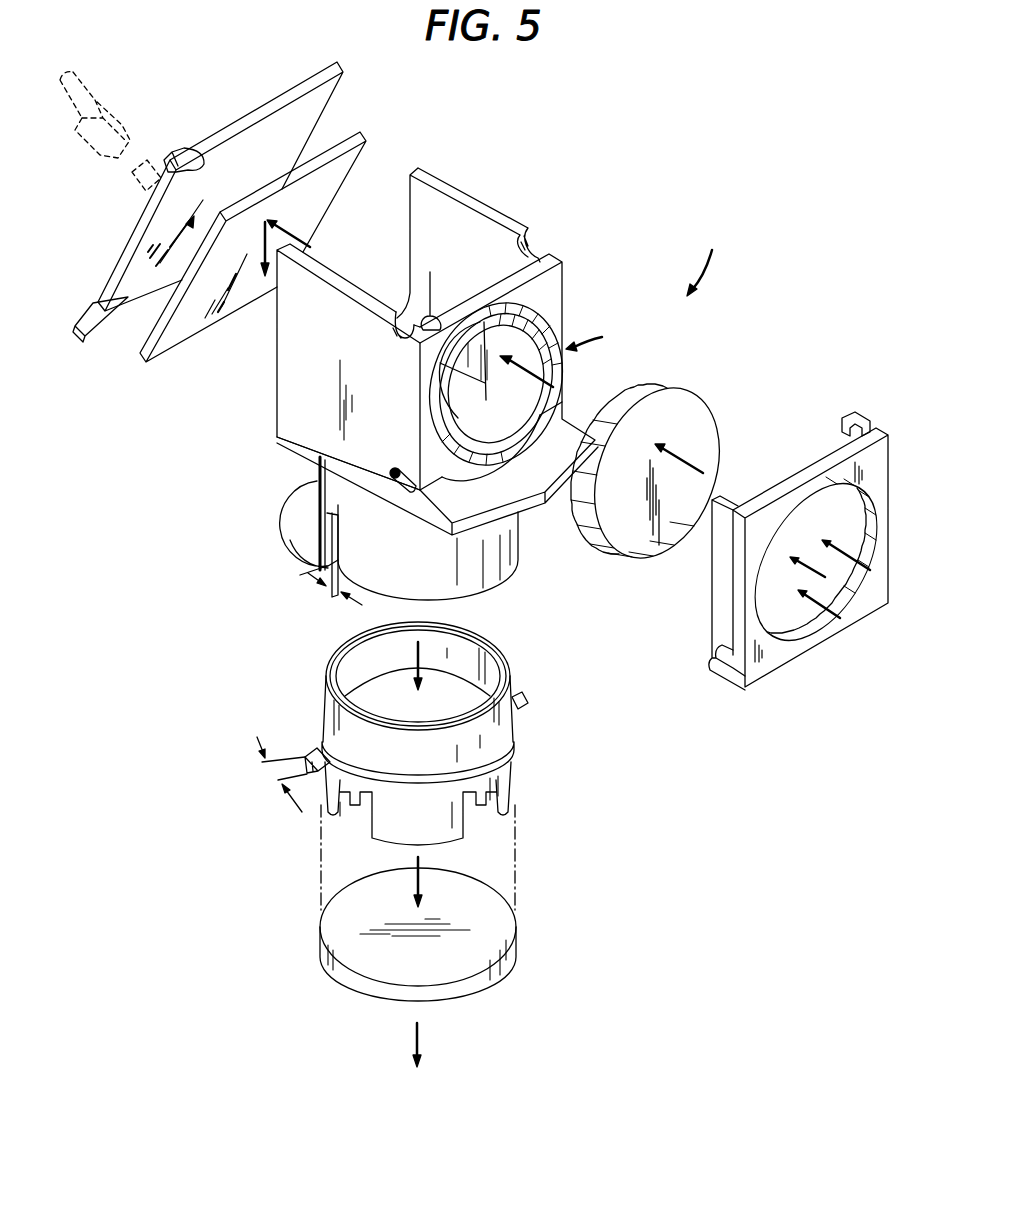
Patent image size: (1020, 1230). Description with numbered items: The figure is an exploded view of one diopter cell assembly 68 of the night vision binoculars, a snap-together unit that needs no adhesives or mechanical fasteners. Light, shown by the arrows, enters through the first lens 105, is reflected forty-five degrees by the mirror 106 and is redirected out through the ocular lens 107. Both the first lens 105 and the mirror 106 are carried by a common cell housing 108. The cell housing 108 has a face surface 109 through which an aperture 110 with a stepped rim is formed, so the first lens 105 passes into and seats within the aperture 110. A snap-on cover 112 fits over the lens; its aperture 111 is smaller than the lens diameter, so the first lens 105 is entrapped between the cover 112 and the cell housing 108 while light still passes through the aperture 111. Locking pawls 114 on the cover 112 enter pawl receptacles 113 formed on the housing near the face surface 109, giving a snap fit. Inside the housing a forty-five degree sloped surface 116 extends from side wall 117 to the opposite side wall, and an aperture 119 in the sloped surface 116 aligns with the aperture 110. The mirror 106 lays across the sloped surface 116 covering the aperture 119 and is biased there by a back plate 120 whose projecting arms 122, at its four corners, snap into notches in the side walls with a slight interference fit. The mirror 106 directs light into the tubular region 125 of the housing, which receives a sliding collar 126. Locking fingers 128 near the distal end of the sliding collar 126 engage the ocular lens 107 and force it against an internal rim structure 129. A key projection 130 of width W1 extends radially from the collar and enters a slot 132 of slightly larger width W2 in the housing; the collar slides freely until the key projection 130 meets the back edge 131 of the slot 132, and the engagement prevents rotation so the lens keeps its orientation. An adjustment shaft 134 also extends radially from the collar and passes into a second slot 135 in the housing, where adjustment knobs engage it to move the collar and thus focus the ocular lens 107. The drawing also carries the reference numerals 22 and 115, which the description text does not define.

The mounting tab 22 is at (90, 313).
The diopter cell assembly 68 is at (708, 260).
The first lens 105 is at (707, 438).
The mirror 106 is at (350, 163).
The ocular lens 107 is at (493, 918).
The cell housing 108 is at (603, 333).
The face surface 109 is at (547, 285).
The aperture 110 is at (510, 393).
The aperture 111 is at (793, 627).
The snap-on cover 112 is at (790, 507).
The pawl receptacles 113 is at (433, 317).
The locking pawls 114 is at (716, 647).
The mirror plate 115 is at (483, 233).
The sloped surface 116 is at (398, 307).
The side wall 117 is at (325, 322).
The aperture 119 is at (472, 404).
The back plate 120 is at (203, 157).
The projecting arms 122 is at (184, 160).
The tubular region 125 is at (310, 482).
The sliding collar 126 is at (487, 740).
The locking fingers 128 is at (357, 822).
The internal rim structure 129 is at (367, 657).
The key projection 130 is at (310, 752).
The back edge 131 is at (303, 537).
The slot 132 is at (300, 575).
The adjustment shaft 134 is at (524, 712).
The second slot 135 is at (503, 543).
The width of key projection W1 is at (262, 766).
The width of slot W2 is at (318, 608).